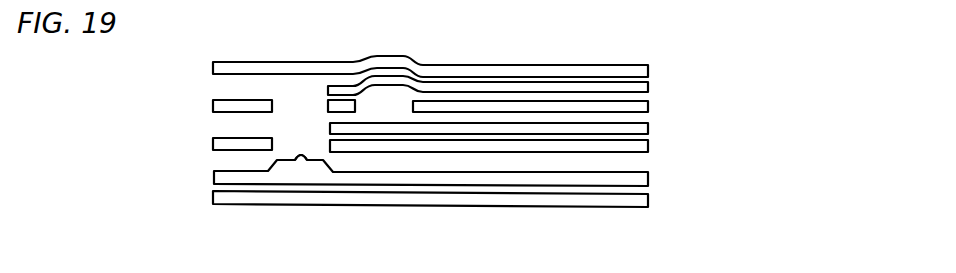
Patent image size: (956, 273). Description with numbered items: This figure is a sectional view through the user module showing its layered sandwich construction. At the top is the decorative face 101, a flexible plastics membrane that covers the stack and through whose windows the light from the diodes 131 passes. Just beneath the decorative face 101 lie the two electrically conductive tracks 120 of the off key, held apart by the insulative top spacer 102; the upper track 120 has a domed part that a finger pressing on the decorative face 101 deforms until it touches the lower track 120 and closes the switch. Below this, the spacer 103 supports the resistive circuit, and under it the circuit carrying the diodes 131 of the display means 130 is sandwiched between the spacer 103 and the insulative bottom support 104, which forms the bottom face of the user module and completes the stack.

The decorative face 101 is at (648, 70).
The off key conductive track 120 is at (648, 89).
The top spacer 102 is at (648, 106).
The spacer 103 is at (648, 143).
The display means 130 is at (222, 178).
The diode 131 is at (300, 152).
The bottom support 104 is at (222, 197).